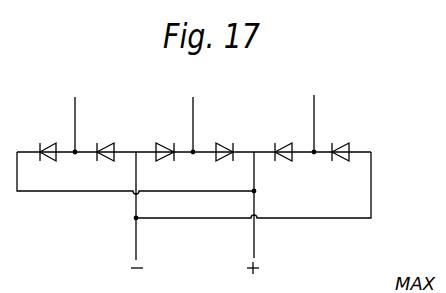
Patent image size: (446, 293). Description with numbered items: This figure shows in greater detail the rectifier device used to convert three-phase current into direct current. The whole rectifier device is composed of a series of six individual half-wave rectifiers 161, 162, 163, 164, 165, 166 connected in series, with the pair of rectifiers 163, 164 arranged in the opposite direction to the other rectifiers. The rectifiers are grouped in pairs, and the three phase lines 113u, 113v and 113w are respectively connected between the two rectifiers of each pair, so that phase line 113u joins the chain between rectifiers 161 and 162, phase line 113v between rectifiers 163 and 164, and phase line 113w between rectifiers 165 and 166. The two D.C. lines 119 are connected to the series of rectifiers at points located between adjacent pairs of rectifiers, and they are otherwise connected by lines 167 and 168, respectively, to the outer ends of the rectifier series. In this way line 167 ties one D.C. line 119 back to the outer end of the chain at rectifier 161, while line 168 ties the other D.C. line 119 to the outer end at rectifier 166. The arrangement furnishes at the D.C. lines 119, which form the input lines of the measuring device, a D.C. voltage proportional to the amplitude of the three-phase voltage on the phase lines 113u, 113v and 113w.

The phase line 113u is at (76, 106).
The phase line 113v is at (194, 106).
The phase line 113w is at (315, 106).
The half-wave rectifier 161 is at (48, 143).
The half-wave rectifier 162 is at (105, 143).
The half-wave rectifier 163 is at (160, 143).
The half-wave rectifier 164 is at (219, 143).
The half-wave rectifier 165 is at (284, 143).
The half-wave rectifier 166 is at (342, 143).
The line 167 is at (52, 192).
The line 168 is at (298, 219).
The D.C. lines 119 is at (137, 232).